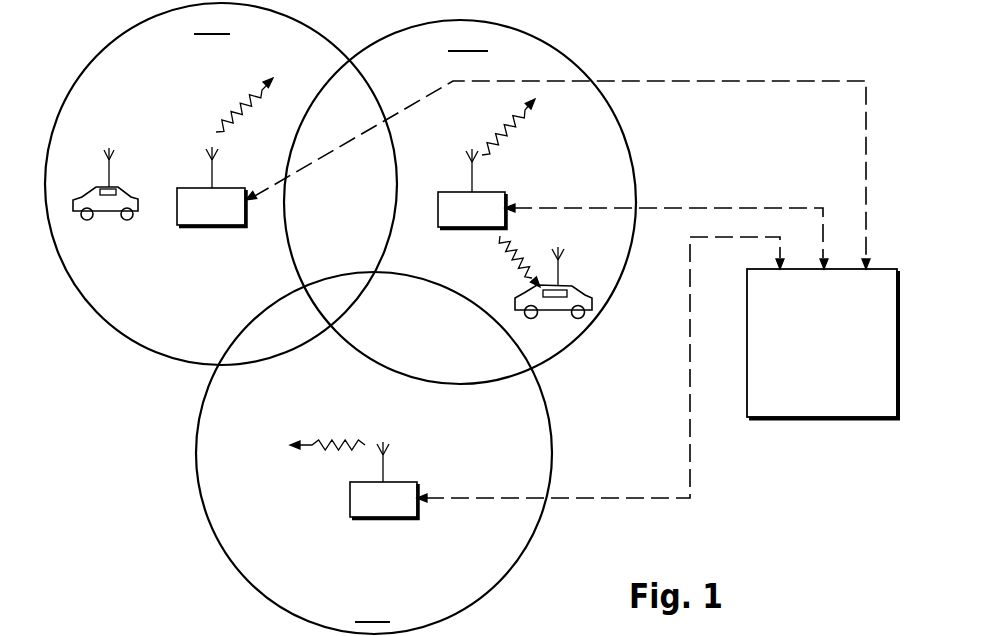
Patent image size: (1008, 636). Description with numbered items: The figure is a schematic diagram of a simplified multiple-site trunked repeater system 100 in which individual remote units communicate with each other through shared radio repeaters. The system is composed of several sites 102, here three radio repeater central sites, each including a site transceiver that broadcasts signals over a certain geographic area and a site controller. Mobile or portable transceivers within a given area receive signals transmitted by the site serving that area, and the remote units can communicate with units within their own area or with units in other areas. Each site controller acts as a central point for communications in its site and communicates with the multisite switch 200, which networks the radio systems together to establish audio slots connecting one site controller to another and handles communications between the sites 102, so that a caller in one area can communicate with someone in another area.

The trunked repeater system 100 is at (650, 402).
The site 102 is at (208, 227).
The multisite switch 200 is at (846, 412).